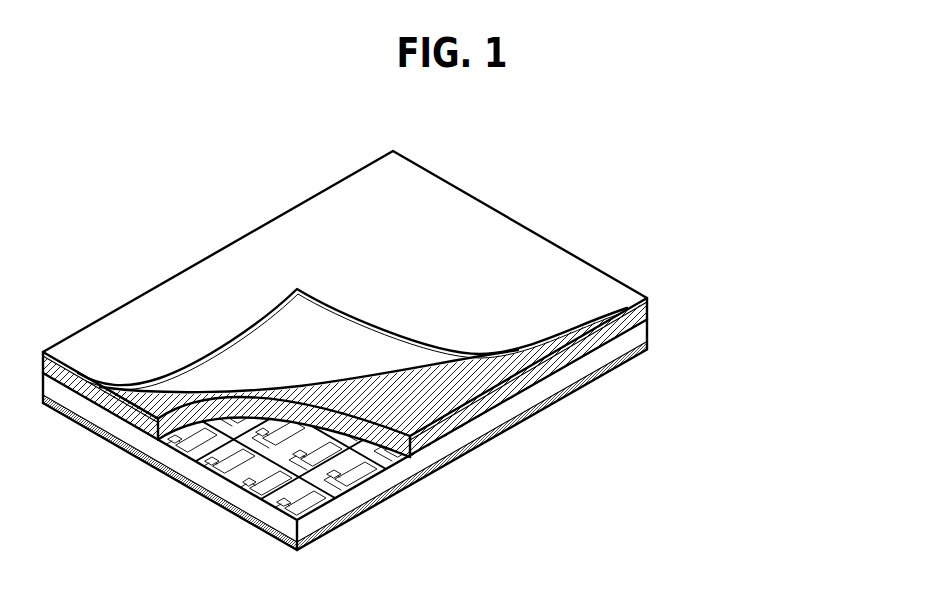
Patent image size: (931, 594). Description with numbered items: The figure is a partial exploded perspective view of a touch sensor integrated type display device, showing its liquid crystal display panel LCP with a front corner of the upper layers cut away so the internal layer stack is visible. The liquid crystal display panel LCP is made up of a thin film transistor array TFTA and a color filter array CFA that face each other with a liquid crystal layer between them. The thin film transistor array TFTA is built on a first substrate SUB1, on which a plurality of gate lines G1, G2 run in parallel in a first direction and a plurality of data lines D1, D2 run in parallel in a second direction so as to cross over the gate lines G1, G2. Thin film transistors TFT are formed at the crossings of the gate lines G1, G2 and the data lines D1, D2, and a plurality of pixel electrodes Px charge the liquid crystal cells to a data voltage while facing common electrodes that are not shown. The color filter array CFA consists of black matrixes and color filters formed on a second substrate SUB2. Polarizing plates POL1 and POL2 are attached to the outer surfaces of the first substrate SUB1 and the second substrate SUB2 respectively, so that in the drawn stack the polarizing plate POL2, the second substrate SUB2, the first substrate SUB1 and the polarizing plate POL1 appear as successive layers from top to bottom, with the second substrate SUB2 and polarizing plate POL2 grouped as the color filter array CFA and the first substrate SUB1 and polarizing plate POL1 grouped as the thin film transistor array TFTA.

The polarizing plate POL2 is at (650, 298).
The second substrate SUB2 is at (650, 308).
The first substrate SUB1 is at (386, 447).
The polarizing plate POL1 is at (650, 345).
The color filter array CFA is at (423, 304).
The thin film transistor array TFTA is at (429, 447).
The liquid crystal display panel LCP is at (456, 362).
The thin film transistor TFT is at (200, 462).
The data line D1 is at (253, 503).
The data line D2 is at (213, 495).
The gate line G1 is at (357, 505).
The gate line G2 is at (400, 475).
The pixel electrode Px is at (290, 510).